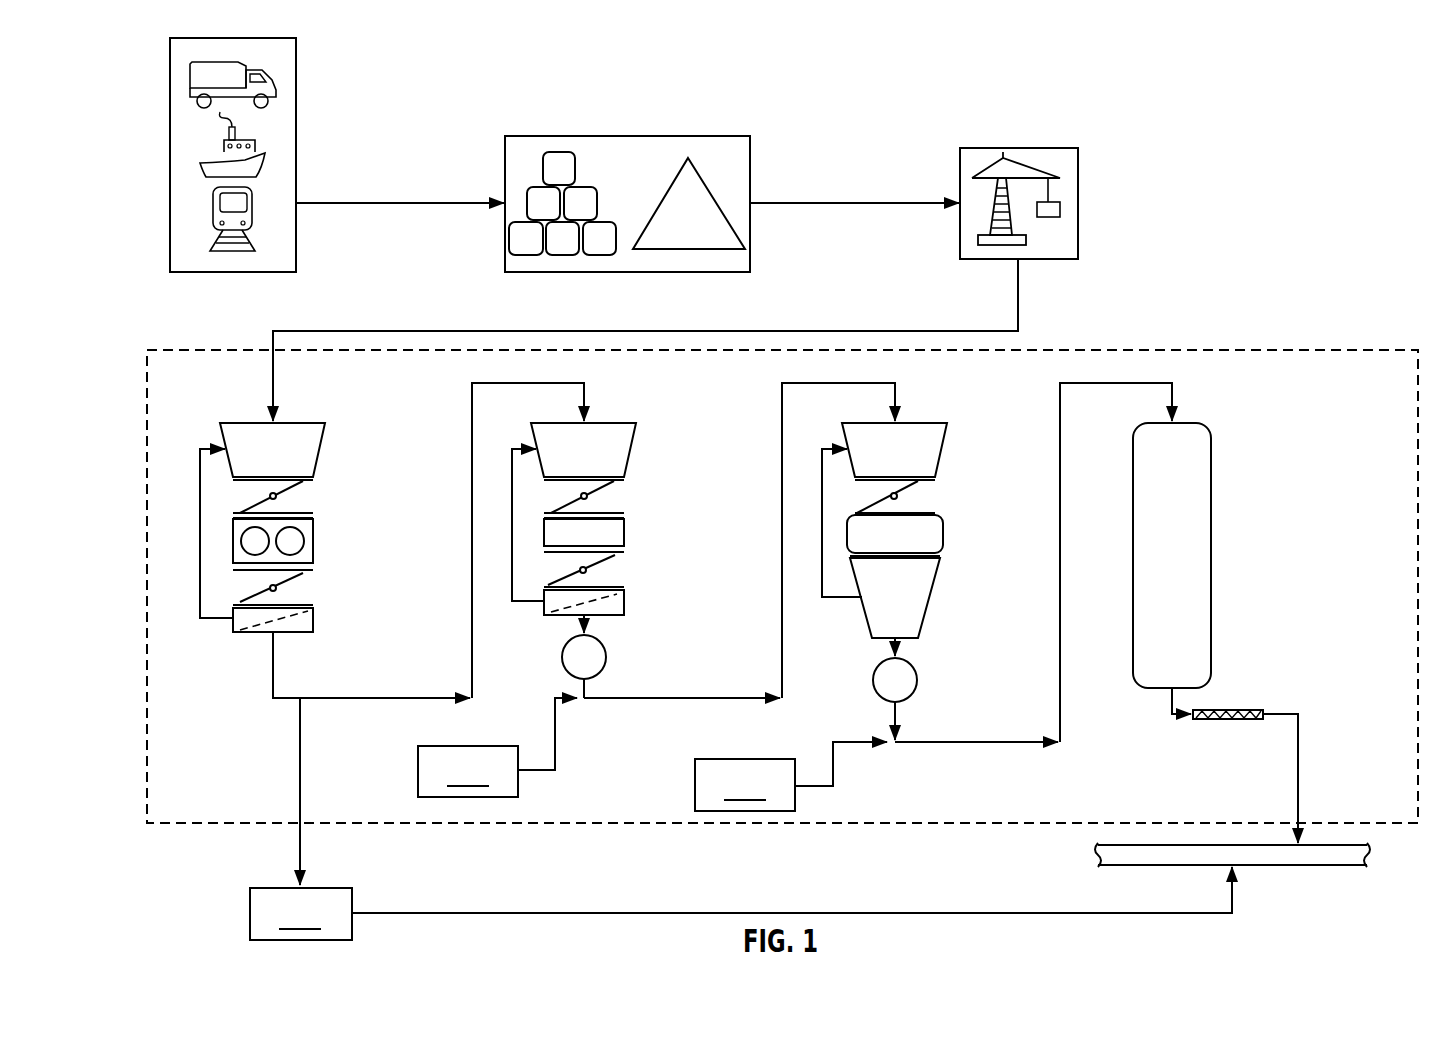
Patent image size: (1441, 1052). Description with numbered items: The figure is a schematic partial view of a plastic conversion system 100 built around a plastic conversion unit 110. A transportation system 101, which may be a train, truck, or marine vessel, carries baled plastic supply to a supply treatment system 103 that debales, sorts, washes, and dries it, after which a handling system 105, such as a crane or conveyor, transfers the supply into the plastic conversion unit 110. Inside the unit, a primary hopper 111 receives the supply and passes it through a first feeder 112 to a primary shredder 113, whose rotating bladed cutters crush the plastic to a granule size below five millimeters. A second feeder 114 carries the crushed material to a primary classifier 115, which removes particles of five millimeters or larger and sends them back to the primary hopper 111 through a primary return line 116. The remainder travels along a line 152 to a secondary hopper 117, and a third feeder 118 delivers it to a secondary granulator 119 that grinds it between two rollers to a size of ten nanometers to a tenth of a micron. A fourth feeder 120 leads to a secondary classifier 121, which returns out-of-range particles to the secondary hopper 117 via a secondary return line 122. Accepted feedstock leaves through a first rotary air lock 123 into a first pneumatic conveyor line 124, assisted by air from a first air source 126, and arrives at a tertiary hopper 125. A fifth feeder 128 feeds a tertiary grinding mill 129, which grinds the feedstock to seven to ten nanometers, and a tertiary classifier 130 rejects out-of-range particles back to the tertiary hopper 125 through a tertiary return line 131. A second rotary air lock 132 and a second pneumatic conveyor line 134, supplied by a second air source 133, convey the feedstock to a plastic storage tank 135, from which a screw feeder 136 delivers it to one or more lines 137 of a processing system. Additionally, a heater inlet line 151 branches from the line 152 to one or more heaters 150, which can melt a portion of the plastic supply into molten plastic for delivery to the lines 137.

The plastic conversion system 100 is at (1356, 106).
The transportation system 101 is at (170, 156).
The supply treatment system 103 is at (505, 166).
The handling system 105 is at (1018, 148).
The plastic conversion unit 110 is at (1306, 348).
The primary hopper 111 is at (253, 423).
The first feeder 112 is at (296, 484).
The primary shredder 113 is at (313, 541).
The second feeder 114 is at (296, 576).
The primary classifier 115 is at (313, 620).
The primary return line 116 is at (200, 572).
The secondary hopper 117 is at (630, 450).
The third feeder 118 is at (606, 484).
The secondary granulator 119 is at (624, 535).
The fourth feeder 120 is at (606, 558).
The secondary classifier 121 is at (624, 600).
The secondary return line 122 is at (512, 580).
The first rotary air lock 123 is at (606, 655).
The first pneumatic conveyor line 124 is at (745, 698).
The tertiary hopper 125 is at (915, 423).
The first air source 126 is at (497, 747).
The fifth feeder 128 is at (918, 484).
The tertiary grinding mill 129 is at (943, 535).
The tertiary classifier 130 is at (930, 598).
The tertiary return line 131 is at (822, 580).
The second rotary air lock 132 is at (917, 680).
The second air source 133 is at (791, 776).
The second pneumatic conveyor line 134 is at (960, 742).
The plastic storage tank 135 is at (1211, 558).
The screw feeder 136 is at (1237, 710).
The one or more lines 137 is at (1278, 868).
The one or more heaters 150 is at (741, 903).
The heater inlet line 151 is at (300, 788).
The line 152 is at (372, 698).